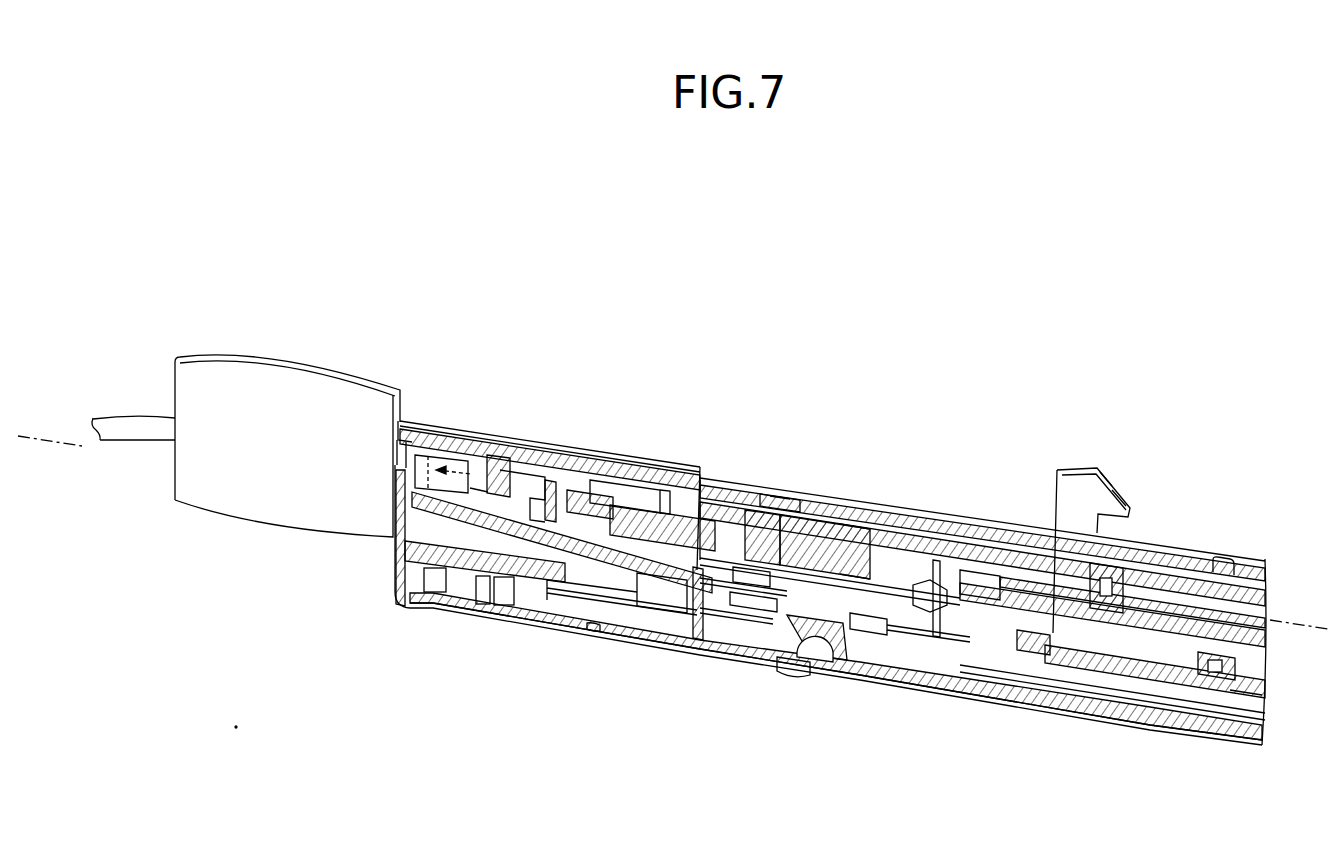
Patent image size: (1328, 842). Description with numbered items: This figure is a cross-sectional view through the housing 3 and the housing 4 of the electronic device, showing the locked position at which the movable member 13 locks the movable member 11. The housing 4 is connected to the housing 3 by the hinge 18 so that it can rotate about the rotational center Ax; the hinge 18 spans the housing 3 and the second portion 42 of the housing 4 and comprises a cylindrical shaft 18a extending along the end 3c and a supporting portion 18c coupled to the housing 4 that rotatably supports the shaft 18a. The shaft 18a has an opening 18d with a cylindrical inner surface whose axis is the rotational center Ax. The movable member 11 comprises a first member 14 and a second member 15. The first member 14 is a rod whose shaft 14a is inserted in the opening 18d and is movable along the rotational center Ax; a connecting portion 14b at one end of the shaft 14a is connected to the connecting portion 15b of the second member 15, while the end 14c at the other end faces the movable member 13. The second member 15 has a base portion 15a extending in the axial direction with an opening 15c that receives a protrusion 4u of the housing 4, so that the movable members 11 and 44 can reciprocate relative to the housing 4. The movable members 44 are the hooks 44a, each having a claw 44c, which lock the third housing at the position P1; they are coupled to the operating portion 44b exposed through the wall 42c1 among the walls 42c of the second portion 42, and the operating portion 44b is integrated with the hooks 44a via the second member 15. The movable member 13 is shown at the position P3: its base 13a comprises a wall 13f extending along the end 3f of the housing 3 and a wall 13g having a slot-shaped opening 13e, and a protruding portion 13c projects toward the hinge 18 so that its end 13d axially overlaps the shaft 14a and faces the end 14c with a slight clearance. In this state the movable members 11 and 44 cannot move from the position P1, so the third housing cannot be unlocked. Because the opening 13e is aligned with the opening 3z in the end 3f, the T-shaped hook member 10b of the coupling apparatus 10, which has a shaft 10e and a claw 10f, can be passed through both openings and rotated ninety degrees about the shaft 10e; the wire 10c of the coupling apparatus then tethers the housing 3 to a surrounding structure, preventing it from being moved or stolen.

The lens 10 is at (296, 358).
The wire 10c is at (138, 418).
The shaft 10e is at (410, 428).
The claw 10f is at (445, 430).
The hook member 10b is at (475, 432).
The housing 3 is at (522, 433).
The end 3f is at (393, 437).
The end 3c is at (612, 452).
The opening 3z is at (390, 465).
The movable member 13 is at (485, 561).
The base 13a is at (490, 568).
The protruding portion 13c is at (492, 508).
The end 13d is at (572, 478).
The opening 13e is at (395, 500).
The wall 13f is at (443, 574).
The wall 13g is at (426, 577).
The first member 14 is at (850, 542).
The shaft 14a is at (863, 585).
The connecting portion 14b is at (975, 585).
The end 14c is at (563, 590).
The second member 15 is at (1012, 614).
The base portion 15a is at (1125, 652).
The connecting portion 15b is at (945, 600).
The opening 15c is at (1238, 705).
The hinge 18 is at (822, 528).
The shaft 18a is at (615, 505).
The supporting portion 18c is at (782, 520).
The opening 18d is at (683, 600).
The housing 4 is at (945, 517).
The protrusion 4u is at (1210, 678).
The movable member 11 is at (972, 545).
The second portion 42 is at (735, 480).
The walls 42c is at (780, 497).
The wall 42c1 is at (773, 490).
The movable members 44 is at (1106, 588).
The hooks 44a is at (1082, 467).
The operating portion 44b is at (1218, 556).
The claw 44c is at (1123, 498).
The position P1 is at (1110, 472).
The position P3 is at (484, 492).
The rotational center Ax is at (50, 437).